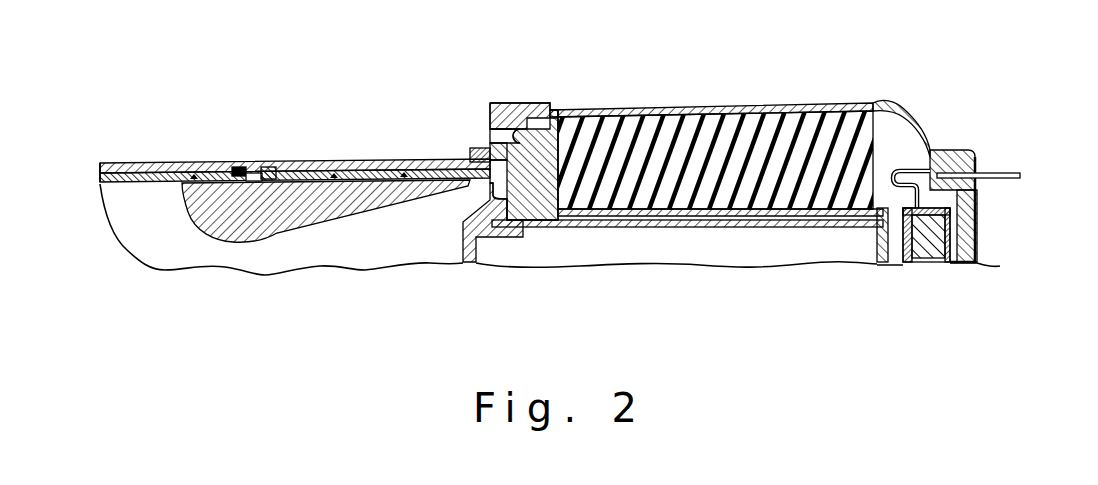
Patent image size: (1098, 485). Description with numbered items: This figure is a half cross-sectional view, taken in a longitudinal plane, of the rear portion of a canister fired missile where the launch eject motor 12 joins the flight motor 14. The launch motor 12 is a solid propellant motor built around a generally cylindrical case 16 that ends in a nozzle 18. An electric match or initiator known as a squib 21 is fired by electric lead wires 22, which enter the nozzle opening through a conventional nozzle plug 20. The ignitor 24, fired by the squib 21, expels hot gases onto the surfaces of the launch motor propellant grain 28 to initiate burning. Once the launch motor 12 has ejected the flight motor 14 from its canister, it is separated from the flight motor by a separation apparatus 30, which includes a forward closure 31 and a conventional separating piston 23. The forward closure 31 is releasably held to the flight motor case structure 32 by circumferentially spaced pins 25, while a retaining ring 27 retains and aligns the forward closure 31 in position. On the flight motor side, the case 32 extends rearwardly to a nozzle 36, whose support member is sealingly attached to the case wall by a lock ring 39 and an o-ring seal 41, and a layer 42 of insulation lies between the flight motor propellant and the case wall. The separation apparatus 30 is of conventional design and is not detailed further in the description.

The launch eject motor 12 is at (718, 152).
The flight motor 14 is at (137, 162).
The case 16 is at (605, 108).
The nozzle 18 is at (939, 150).
The nozzle plug 20 is at (973, 163).
The squib 21 is at (920, 262).
The electric lead wires 22 is at (1008, 180).
The separating piston 23 is at (463, 243).
The ignitor 24 is at (932, 240).
The pins 25 is at (467, 153).
The retaining ring 27 is at (515, 115).
The launch motor propellant grain 28 is at (718, 118).
The separation apparatus 30 is at (480, 143).
The forward closure 31 is at (537, 219).
The flight motor case structure 32 is at (204, 162).
The nozzle 36 is at (385, 184).
The lock ring 39 is at (271, 167).
The o-ring seal 41 is at (239, 167).
The layer of insulation 42 is at (130, 185).